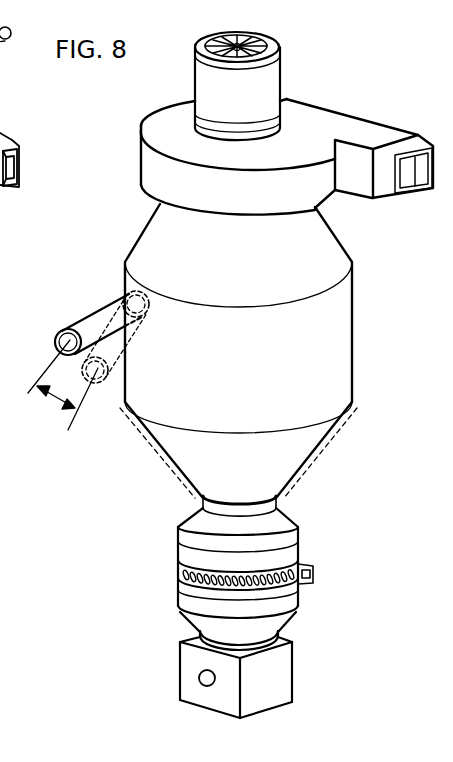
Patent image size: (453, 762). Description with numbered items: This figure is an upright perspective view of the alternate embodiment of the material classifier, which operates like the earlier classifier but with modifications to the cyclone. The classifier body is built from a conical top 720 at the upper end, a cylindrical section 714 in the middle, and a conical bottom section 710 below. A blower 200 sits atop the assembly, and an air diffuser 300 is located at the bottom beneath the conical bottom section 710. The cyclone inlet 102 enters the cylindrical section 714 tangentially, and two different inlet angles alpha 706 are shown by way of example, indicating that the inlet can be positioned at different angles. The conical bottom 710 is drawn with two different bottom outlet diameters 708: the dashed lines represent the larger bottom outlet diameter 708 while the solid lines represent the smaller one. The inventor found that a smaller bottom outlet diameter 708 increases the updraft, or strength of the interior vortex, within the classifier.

The blower 200 is at (312, 66).
The conical top 720 is at (322, 238).
The cylindrical section 714 is at (325, 351).
The conical bottom section 710 is at (300, 441).
The bottom outlet diameter 708 is at (288, 498).
The cyclone inlet 102 is at (93, 322).
The inlet angle alpha 706 is at (53, 403).
The air diffuser 300 is at (135, 662).